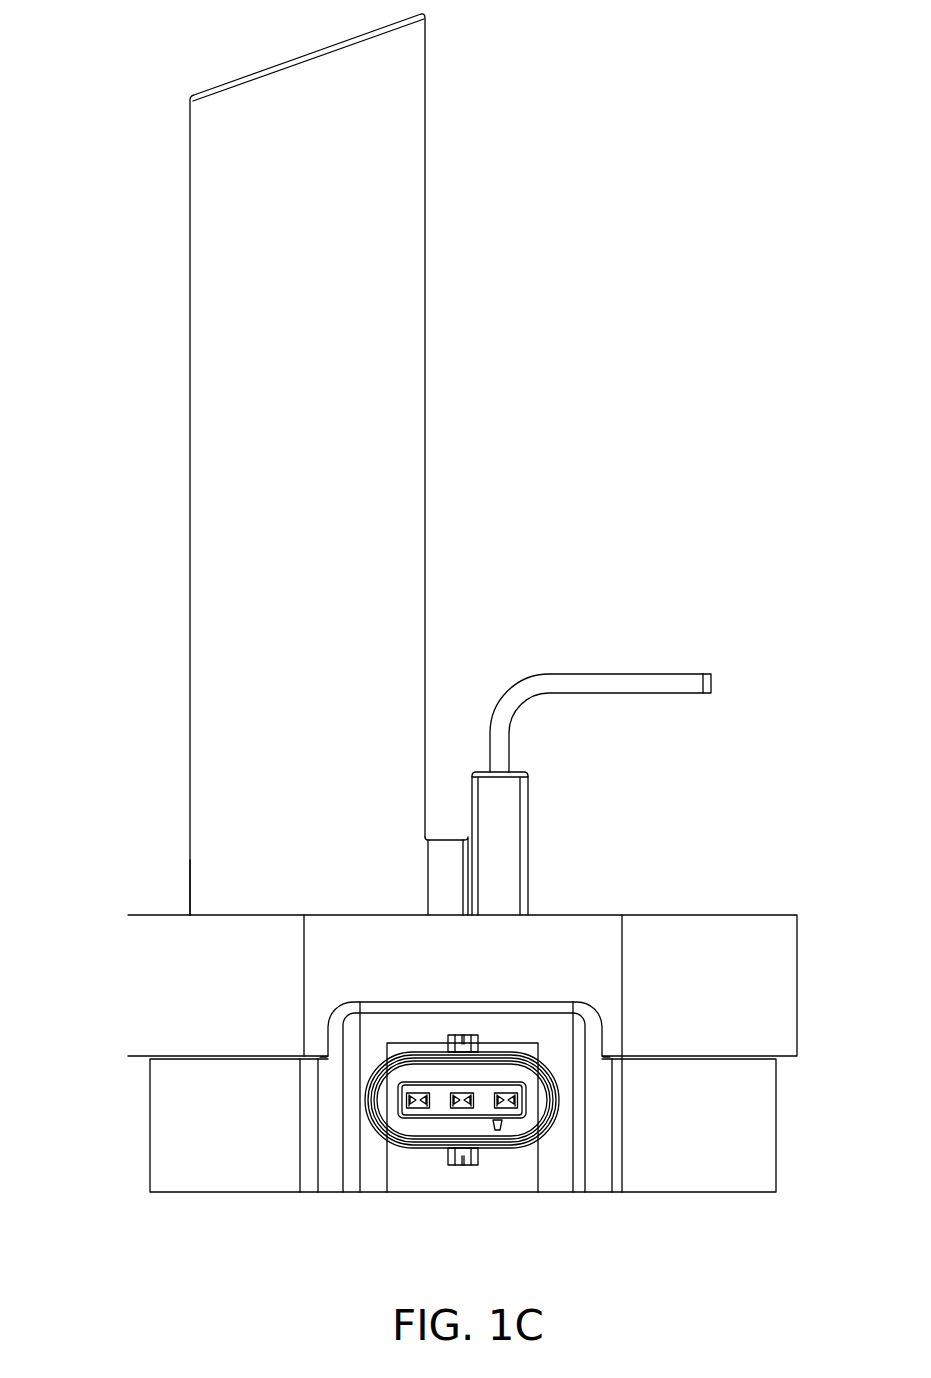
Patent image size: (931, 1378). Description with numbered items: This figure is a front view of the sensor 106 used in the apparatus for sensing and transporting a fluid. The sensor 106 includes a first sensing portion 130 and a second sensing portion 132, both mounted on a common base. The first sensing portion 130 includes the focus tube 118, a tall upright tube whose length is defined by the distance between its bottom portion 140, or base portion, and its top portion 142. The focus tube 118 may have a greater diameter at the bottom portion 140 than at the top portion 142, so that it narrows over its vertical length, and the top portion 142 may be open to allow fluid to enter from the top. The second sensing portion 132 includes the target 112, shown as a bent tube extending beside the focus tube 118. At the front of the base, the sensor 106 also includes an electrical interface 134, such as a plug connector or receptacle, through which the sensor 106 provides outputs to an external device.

The sensor 106 is at (700, 68).
The first sensing portion 130 is at (155, 640).
The focus tube 118 is at (425, 364).
The top portion 142 is at (303, 54).
The bottom portion 140 is at (203, 880).
The second sensing portion 132 is at (618, 600).
The target 112 is at (695, 673).
The electrical interface 134 is at (500, 1147).